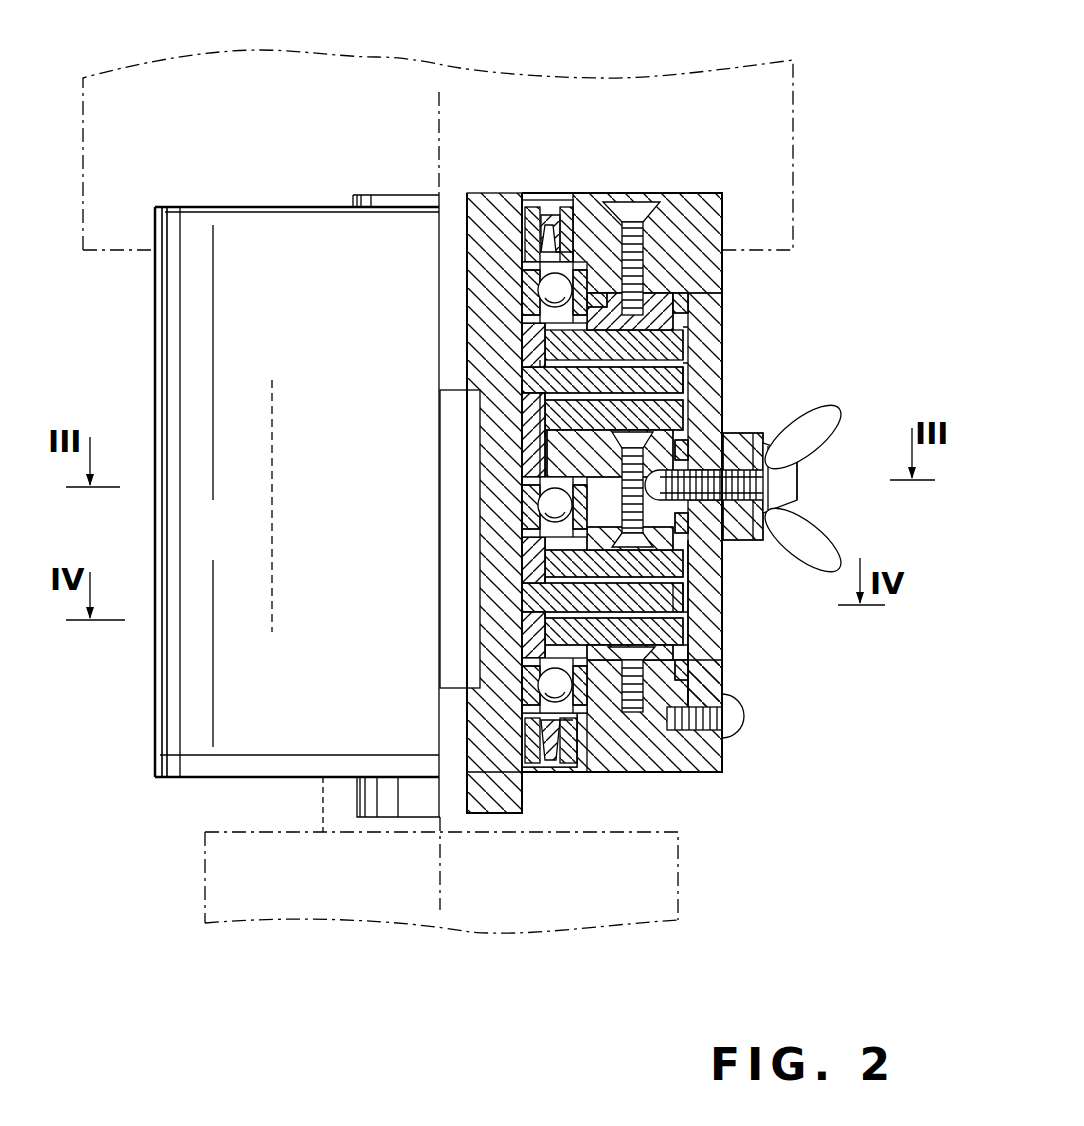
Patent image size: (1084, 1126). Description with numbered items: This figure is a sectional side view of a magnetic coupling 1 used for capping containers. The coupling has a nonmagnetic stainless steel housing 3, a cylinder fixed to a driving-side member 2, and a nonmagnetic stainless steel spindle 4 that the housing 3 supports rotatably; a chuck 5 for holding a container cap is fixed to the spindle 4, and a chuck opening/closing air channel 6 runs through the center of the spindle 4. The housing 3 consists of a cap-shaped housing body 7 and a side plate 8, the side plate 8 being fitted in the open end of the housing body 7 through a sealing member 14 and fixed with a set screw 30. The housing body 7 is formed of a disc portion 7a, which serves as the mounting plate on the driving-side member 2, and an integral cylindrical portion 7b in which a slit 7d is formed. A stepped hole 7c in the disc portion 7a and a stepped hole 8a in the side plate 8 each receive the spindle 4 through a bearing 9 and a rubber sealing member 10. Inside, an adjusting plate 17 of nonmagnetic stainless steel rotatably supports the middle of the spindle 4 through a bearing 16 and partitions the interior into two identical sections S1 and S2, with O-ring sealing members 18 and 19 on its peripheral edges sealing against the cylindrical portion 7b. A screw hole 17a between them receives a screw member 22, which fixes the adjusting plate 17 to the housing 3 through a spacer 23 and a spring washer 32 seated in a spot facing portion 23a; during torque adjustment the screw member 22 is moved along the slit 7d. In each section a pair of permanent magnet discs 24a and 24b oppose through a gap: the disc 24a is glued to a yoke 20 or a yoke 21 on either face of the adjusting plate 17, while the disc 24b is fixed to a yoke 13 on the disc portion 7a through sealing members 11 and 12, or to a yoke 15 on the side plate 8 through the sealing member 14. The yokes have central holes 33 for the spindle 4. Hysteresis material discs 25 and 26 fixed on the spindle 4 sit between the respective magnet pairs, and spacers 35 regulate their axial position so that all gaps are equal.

The magnetic coupling 1 is at (152, 378).
The driving-side member 2 is at (600, 78).
The housing 3 is at (152, 527).
The spindle 4 is at (488, 215).
The chuck 5 is at (618, 920).
The chuck opening/closing air channel 6 is at (467, 780).
The housing body 7 is at (727, 259).
The disc portion 7a is at (676, 245).
The cylindrical portion 7b is at (724, 357).
The stepped hole 7c is at (555, 218).
The slit 7d is at (740, 548).
The side plate 8 is at (700, 775).
The stepped hole 8a is at (565, 765).
The bearing 9 is at (530, 262).
The sealing member 10 is at (520, 222).
The sealing member 11 is at (590, 293).
The sealing member 12 is at (722, 300).
The yoke 13 is at (703, 247).
The sealing member 14 is at (700, 686).
The yoke 15 is at (705, 658).
The bearing 16 is at (555, 505).
The adjusting plate 17 is at (556, 470).
The screw hole 17a is at (728, 435).
The sealing member 18 is at (733, 410).
The sealing member 19 is at (712, 600).
The yoke 20 is at (535, 440).
The yoke 21 is at (562, 527).
The screw member 22 is at (790, 480).
The spacer 23 is at (812, 447).
The spot facing portion 23a is at (843, 546).
The permanent magnet disc 24a is at (548, 375).
The permanent magnet disc 24b is at (548, 330).
The hysteresis material disc 25 is at (535, 345).
The hysteresis material disc 26 is at (545, 612).
The set screw 30 is at (745, 716).
The spring washer 32 is at (793, 506).
The central hole 33 is at (540, 285).
The spacer 35 is at (545, 305).
The section S1 is at (720, 332).
The section S2 is at (720, 630).